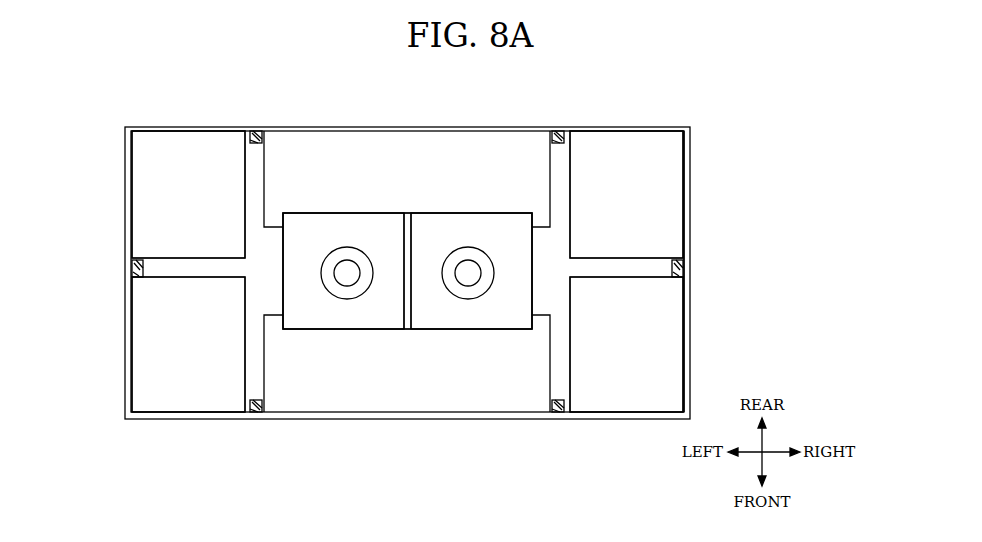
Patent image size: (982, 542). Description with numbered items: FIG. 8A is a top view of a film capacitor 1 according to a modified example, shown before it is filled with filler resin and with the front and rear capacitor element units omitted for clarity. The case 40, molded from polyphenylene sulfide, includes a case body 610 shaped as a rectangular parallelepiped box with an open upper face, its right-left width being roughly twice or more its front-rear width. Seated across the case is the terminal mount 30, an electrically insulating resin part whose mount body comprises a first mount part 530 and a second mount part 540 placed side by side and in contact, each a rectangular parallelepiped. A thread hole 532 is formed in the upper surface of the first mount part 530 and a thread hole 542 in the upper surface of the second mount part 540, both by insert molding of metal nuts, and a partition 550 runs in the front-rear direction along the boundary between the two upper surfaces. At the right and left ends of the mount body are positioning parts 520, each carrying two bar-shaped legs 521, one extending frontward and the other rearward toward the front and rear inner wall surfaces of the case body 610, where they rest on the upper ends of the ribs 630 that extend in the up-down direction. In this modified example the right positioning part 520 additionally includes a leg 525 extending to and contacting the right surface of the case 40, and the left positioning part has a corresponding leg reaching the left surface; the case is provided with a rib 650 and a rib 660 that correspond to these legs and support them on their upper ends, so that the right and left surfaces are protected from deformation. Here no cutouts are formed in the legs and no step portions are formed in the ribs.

The film capacitor 1 is at (98, 250).
The terminal mount 30 is at (408, 335).
The case 40 is at (702, 180).
The positioning part 520 is at (240, 233).
The leg 521 is at (245, 183).
The leg 525 is at (193, 279).
The first mount part 530 is at (478, 335).
The thread hole 532 is at (468, 260).
The second mount part 540 is at (352, 335).
The thread hole 542 is at (347, 260).
The partition 550 is at (407, 212).
The case body 610 is at (692, 248).
The rib 630 is at (254, 136).
The rib 650 is at (685, 282).
The rib 660 is at (131, 280).